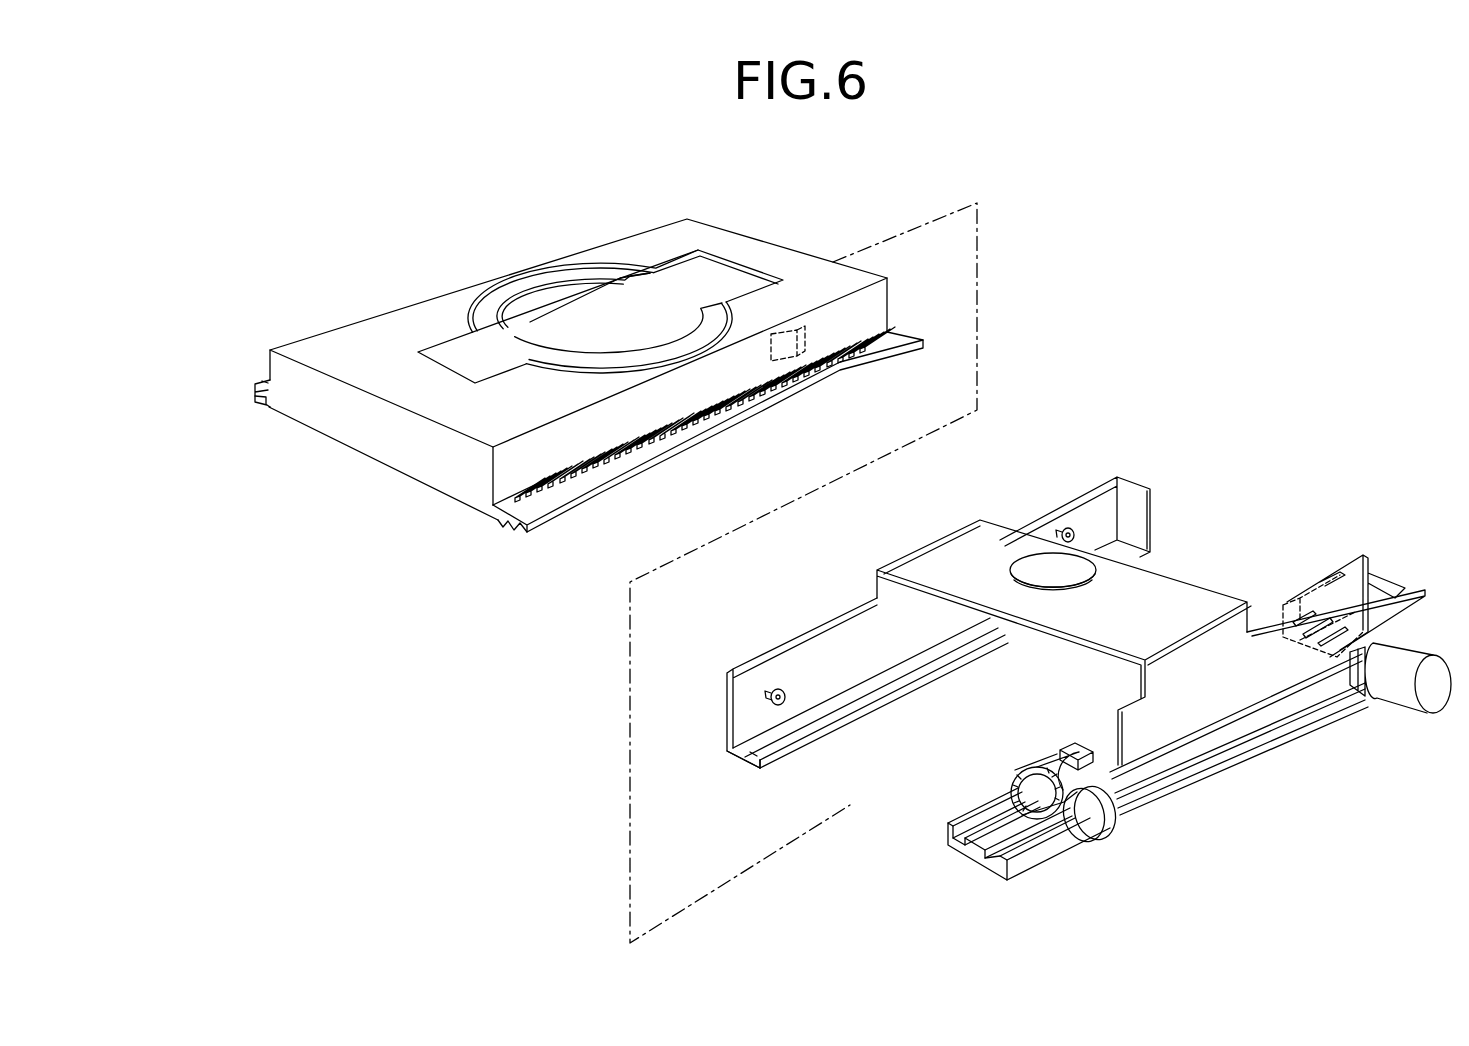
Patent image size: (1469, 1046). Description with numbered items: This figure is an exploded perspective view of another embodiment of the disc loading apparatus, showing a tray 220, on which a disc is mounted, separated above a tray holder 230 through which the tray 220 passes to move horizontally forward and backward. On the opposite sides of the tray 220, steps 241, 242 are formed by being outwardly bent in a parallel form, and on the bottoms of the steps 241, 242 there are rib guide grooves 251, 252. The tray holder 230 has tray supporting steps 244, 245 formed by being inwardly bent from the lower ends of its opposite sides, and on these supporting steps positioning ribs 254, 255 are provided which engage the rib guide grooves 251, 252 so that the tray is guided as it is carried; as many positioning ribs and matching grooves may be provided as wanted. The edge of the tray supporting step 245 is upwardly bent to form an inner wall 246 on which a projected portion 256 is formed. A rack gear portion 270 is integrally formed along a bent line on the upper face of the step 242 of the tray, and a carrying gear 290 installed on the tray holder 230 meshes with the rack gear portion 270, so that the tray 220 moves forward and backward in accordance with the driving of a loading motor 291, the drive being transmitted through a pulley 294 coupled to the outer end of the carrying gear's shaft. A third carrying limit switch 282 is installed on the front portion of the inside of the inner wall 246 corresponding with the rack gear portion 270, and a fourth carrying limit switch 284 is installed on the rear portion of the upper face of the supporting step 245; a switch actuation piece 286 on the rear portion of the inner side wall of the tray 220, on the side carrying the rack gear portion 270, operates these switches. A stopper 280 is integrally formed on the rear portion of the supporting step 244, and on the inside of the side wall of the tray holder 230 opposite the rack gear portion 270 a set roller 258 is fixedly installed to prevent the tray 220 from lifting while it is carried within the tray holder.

The tray 220 is at (372, 294).
The step 241 is at (265, 382).
The rib guide groove 251 is at (266, 405).
The rib guide groove 252 is at (500, 527).
The step 242 is at (538, 510).
The rack gear portion 270 is at (857, 360).
The switch actuation piece 286 is at (808, 332).
The tray holder 230 is at (831, 608).
The tray supporting step 244 is at (725, 753).
The positioning rib 254 is at (760, 770).
The set roller 258 is at (773, 691).
The stopper 280 is at (1140, 525).
The fourth carrying limit switch 284 is at (1378, 588).
The third carrying limit switch 282 is at (1068, 748).
The carrying gear 290 is at (1022, 760).
The pulley 294 is at (1098, 830).
The loading motor 291 is at (1403, 703).
The tray supporting step 245 is at (984, 868).
The inner wall 246 is at (948, 833).
The projected portion 256 is at (953, 840).
The positioning rib 255 is at (973, 845).